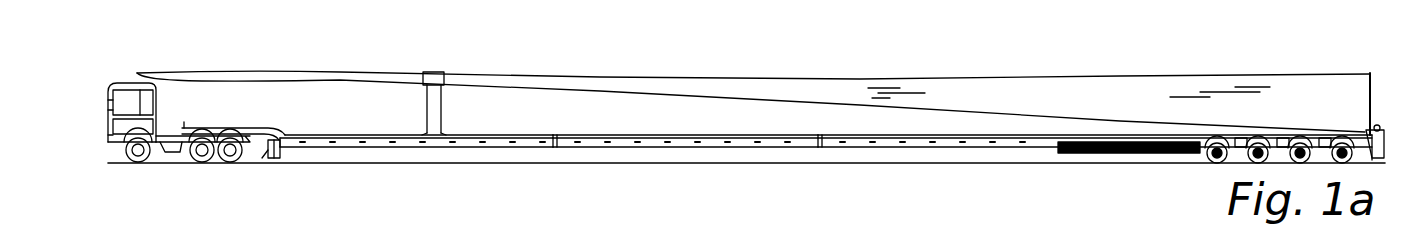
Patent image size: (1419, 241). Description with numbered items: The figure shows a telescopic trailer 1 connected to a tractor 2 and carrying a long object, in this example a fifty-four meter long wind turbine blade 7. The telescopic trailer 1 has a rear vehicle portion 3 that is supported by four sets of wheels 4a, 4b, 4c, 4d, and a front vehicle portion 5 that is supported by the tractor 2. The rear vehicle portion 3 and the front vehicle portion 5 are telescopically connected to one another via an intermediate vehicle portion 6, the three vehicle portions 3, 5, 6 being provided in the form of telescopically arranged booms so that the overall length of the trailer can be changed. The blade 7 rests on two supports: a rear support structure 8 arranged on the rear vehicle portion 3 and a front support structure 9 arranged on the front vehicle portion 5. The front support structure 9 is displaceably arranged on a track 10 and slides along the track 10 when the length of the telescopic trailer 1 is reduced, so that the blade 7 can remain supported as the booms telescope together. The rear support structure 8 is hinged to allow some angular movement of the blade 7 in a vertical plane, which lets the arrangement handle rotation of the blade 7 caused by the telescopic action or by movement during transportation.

The telescopic trailer 1 is at (791, 172).
The tractor 2 is at (118, 83).
The rear vehicle portion 3 is at (950, 140).
The set of wheels 4a is at (1215, 143).
The set of wheels 4b is at (1257, 143).
The set of wheels 4c is at (1298, 143).
The set of wheels 4d is at (1340, 143).
The front vehicle portion 5 is at (338, 147).
The intermediate vehicle portion 6 is at (637, 141).
The wind turbine blade 7 is at (1025, 103).
The rear support structure 8 is at (1377, 106).
The front support structure 9 is at (432, 106).
The track 10 is at (276, 161).